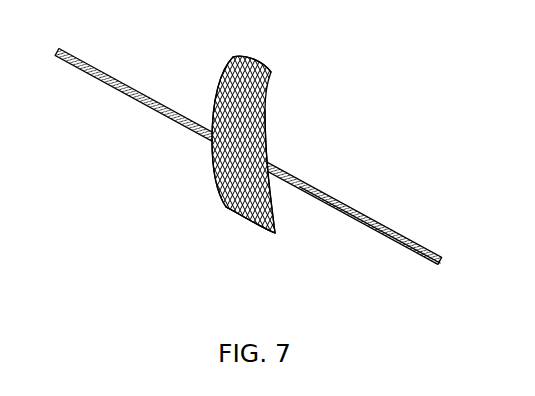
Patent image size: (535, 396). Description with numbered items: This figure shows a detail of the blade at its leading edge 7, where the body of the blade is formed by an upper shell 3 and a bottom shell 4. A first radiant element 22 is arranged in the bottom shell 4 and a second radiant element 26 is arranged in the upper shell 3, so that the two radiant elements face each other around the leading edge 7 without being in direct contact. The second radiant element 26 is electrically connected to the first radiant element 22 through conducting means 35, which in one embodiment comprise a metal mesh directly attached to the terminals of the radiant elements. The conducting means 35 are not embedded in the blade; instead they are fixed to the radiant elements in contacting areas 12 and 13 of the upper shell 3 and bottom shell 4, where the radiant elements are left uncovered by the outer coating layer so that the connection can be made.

The leading edge 7 is at (143, 102).
The first radiant element 22 is at (292, 222).
The contacting area 13 is at (244, 161).
The contacting area 12 is at (227, 199).
The second radiant element 26 is at (207, 68).
The conducting means 35 is at (247, 192).
The bottom shell 4 is at (183, 170).
The upper shell 3 is at (337, 158).